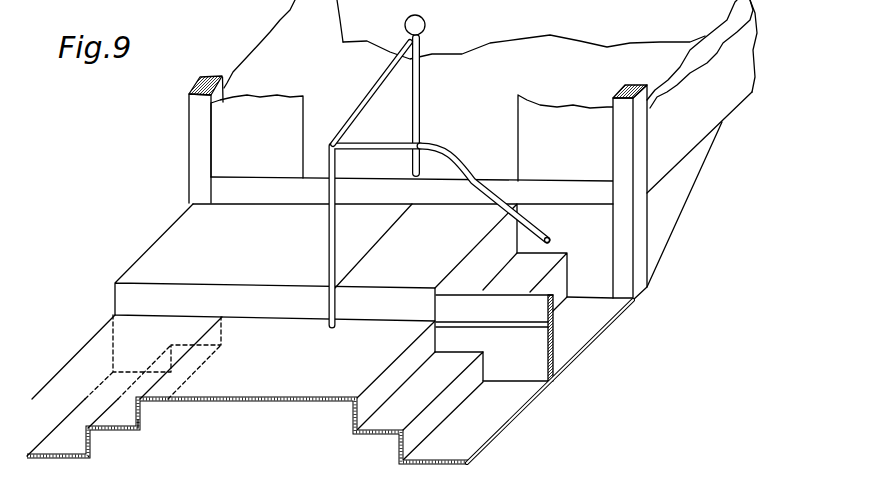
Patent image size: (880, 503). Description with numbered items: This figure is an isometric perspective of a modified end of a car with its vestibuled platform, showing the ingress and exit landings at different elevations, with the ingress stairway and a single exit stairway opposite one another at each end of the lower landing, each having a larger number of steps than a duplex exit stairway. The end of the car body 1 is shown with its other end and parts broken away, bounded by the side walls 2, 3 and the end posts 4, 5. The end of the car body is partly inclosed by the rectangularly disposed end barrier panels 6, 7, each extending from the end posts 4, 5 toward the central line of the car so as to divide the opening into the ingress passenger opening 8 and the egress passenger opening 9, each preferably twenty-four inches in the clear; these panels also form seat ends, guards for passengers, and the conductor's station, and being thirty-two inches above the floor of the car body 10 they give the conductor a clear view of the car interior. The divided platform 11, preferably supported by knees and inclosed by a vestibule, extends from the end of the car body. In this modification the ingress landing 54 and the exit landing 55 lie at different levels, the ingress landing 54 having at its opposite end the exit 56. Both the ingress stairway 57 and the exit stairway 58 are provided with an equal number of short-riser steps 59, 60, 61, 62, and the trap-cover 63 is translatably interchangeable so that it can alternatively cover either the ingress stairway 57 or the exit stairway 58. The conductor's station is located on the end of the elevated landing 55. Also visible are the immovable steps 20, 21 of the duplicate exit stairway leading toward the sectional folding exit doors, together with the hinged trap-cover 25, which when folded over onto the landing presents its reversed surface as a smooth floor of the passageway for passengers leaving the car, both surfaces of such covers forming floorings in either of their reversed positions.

The end of the car body 1 is at (655, 205).
The side wall 2 is at (273, 37).
The side wall 3 is at (723, 82).
The end post 4 is at (200, 140).
The end post 5 is at (640, 137).
The end barrier panel 6 is at (257, 136).
The end barrier panel 7 is at (565, 138).
The ingress passenger opening 8 is at (378, 170).
The egress passenger opening 9 is at (485, 194).
The floor of the car body 10 is at (458, 108).
The divided platform 11 is at (263, 402).
The immovable step 20 is at (525, 282).
The immovable step 21 is at (524, 338).
The hinged trap-cover 25 is at (426, 246).
The ingress landing 54 is at (409, 360).
The exit landing 55 is at (185, 270).
The exit 56 is at (95, 338).
The ingress stairway 57 is at (542, 391).
The exit stairway 58 is at (130, 430).
The short-riser step 59 is at (442, 422).
The short-riser step 60 is at (419, 392).
The short-riser step 61 is at (56, 427).
The short-riser step 62 is at (106, 413).
The trap-cover 63 is at (153, 357).